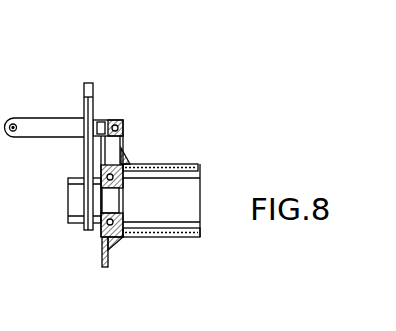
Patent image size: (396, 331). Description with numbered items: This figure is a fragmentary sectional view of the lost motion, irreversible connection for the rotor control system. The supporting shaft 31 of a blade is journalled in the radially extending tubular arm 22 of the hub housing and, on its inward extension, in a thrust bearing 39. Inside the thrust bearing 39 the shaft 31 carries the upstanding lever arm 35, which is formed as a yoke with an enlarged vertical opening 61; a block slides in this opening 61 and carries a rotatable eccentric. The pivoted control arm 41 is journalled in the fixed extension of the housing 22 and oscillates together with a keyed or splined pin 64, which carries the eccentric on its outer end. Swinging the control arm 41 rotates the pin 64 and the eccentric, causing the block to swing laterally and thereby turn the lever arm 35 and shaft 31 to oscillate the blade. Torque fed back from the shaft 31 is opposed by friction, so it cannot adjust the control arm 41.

The tubular arm 22 is at (199, 173).
The supporting shaft 31 is at (182, 213).
The lever arm 35 is at (93, 83).
The thrust bearing 39 is at (114, 238).
The control arm 41 is at (33, 125).
The vertical opening 61 is at (93, 108).
The pin 64 is at (123, 127).